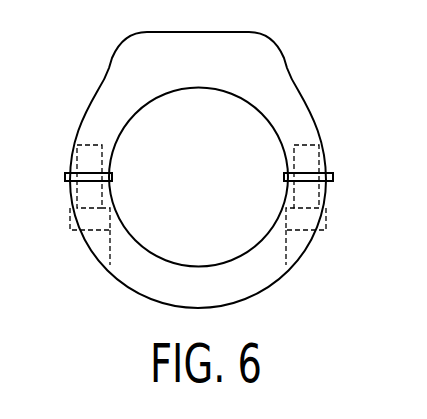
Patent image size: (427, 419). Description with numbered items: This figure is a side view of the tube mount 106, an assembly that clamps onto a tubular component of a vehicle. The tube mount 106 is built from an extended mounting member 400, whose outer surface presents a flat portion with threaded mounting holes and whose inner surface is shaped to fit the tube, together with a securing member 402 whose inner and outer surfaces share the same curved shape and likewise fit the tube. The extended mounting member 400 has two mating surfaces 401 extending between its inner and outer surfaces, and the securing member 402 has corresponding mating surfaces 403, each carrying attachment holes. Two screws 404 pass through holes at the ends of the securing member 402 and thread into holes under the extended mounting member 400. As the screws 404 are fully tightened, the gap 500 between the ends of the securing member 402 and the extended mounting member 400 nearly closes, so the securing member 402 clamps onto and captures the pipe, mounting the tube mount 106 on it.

The tube mount 106 is at (302, 58).
The extended mounting member 400 is at (304, 100).
The securing member 402 is at (270, 290).
The gap 500 is at (113, 178).
The mating surface 401 is at (66, 177).
The mating surface 403 is at (66, 181).
The screw 404 is at (322, 224).